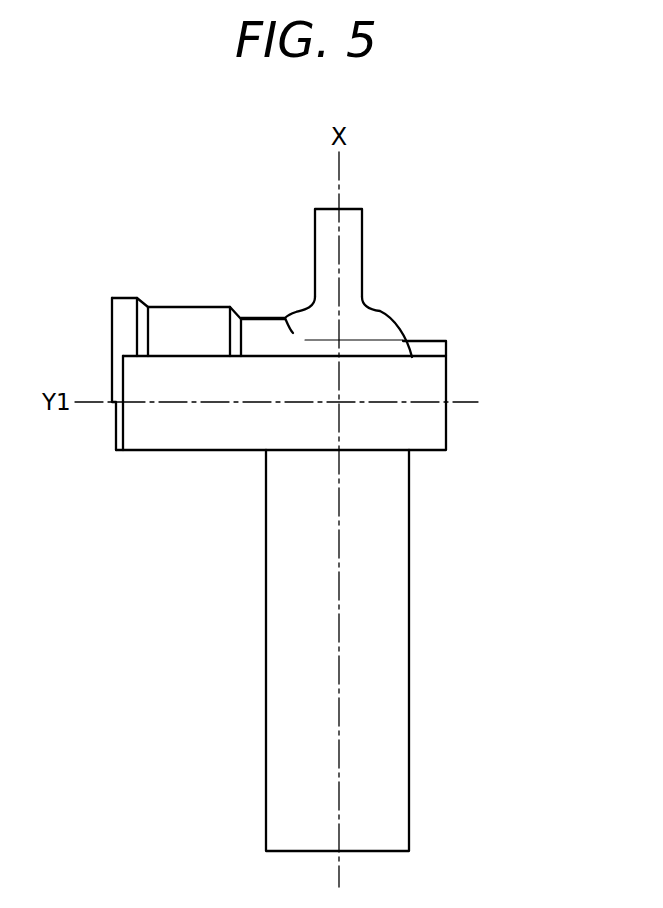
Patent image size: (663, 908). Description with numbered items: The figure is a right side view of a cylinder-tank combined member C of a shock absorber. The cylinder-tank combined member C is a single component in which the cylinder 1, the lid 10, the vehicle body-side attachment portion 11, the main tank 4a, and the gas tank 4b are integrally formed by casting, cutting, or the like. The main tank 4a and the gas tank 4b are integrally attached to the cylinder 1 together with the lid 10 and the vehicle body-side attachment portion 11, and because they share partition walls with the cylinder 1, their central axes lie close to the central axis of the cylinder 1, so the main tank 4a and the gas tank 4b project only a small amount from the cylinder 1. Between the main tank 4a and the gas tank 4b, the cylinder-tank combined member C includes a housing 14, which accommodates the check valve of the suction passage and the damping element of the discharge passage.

The cylinder 1 is at (393, 692).
The main tank 4a is at (222, 438).
The gas tank 4b is at (427, 340).
The lid 10 is at (377, 327).
The vehicle body-side attachment portion 11 is at (313, 248).
The housing 14 is at (181, 305).
The cylinder-tank combined member C is at (216, 745).